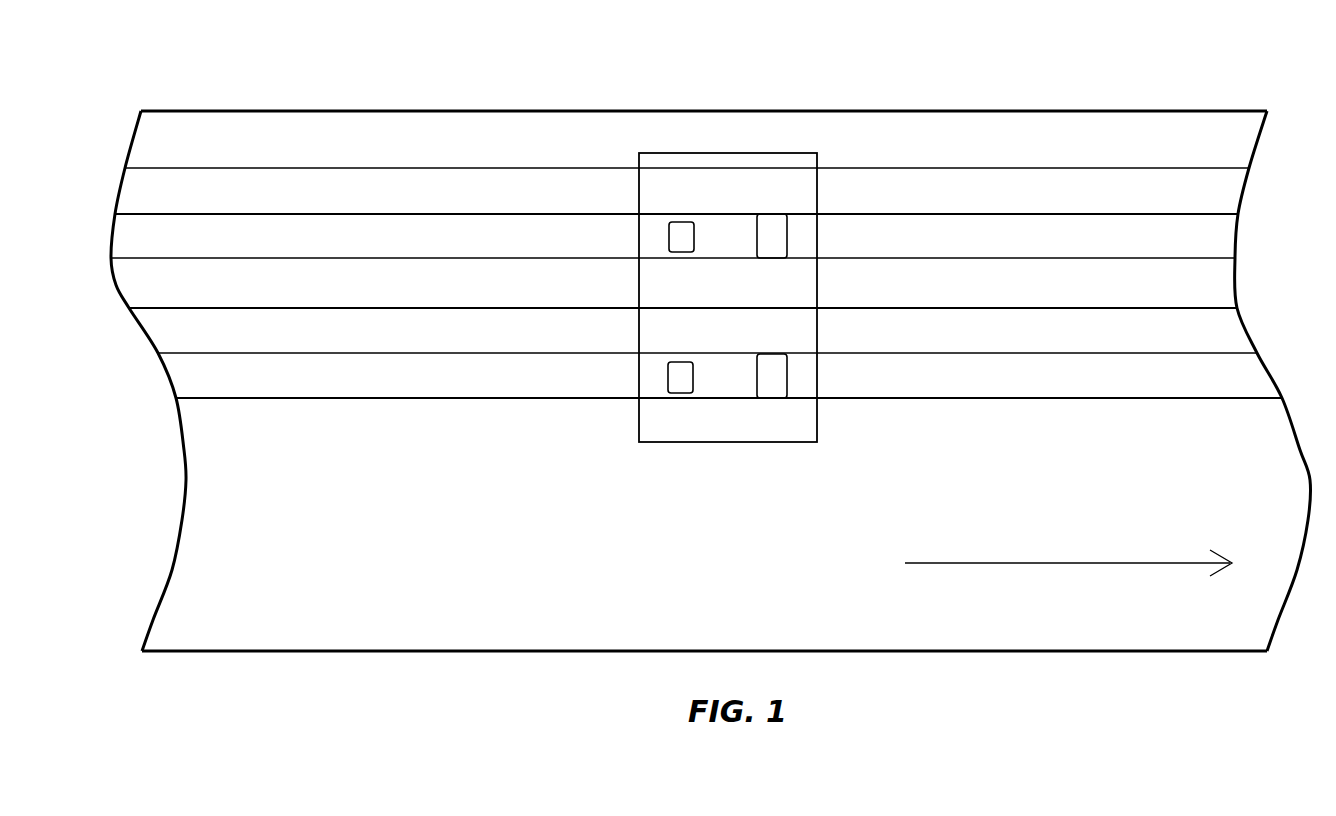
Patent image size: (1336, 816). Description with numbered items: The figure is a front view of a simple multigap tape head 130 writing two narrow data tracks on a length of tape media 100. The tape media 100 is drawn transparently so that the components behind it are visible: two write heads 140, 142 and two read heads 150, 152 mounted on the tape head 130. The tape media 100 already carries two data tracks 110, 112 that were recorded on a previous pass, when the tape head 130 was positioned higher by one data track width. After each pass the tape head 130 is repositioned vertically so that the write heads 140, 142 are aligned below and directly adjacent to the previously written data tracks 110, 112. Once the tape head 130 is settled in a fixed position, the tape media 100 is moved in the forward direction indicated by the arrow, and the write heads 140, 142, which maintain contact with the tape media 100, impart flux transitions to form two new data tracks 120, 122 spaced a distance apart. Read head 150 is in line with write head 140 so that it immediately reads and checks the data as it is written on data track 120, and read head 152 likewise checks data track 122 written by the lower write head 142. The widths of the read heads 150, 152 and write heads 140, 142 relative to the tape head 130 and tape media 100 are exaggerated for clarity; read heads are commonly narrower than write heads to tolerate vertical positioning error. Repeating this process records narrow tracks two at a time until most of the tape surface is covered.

The tape media 100 is at (292, 111).
The previously recorded data track 110 is at (1212, 198).
The previously recorded data track 112 is at (1231, 338).
The data track 120 is at (136, 238).
The data track 122 is at (182, 381).
The multigap tape head 130 is at (785, 443).
The write head 140 is at (781, 232).
The write head 142 is at (779, 380).
The read head 150 is at (681, 252).
The read head 152 is at (680, 393).